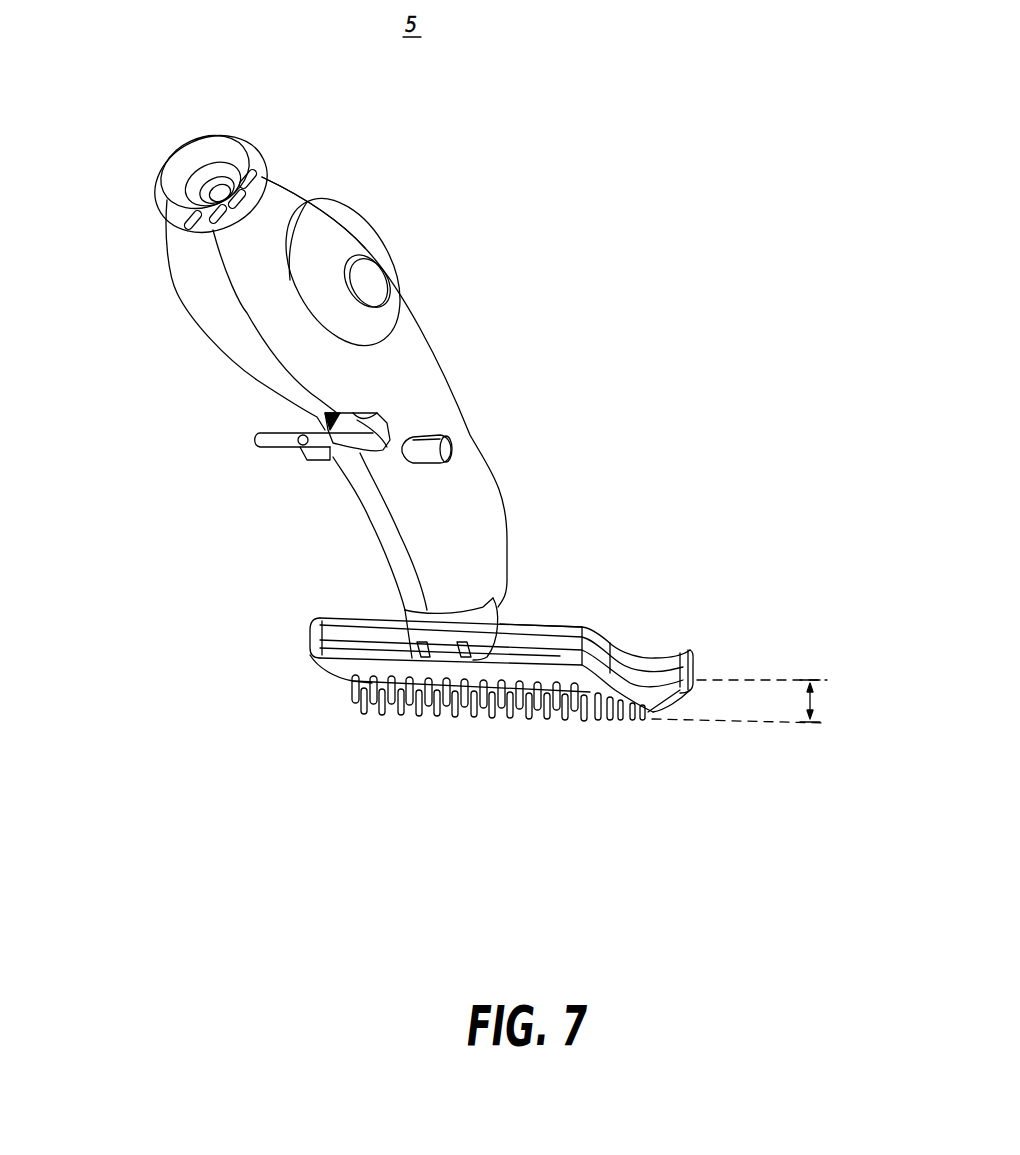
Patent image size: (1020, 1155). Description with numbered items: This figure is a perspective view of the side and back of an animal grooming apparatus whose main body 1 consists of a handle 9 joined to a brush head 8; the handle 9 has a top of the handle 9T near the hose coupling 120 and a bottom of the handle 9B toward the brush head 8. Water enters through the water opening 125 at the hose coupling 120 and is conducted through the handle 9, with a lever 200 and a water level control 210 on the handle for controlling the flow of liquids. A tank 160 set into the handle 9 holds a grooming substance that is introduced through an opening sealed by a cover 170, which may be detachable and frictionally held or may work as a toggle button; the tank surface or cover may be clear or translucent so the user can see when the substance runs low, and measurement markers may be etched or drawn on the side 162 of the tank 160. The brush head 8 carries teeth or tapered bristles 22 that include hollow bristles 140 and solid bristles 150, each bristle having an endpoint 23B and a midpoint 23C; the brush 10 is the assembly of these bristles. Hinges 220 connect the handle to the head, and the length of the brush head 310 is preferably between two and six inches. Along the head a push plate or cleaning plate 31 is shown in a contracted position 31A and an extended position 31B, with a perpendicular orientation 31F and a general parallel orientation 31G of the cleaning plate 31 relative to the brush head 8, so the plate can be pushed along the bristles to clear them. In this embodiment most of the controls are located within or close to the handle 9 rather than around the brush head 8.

The main body 1 is at (483, 190).
The brush head 8 is at (656, 606).
The handle 9 is at (153, 278).
The bottom of the handle 9B is at (203, 313).
The top of the handle 9T is at (297, 187).
The brush 10 is at (472, 723).
The tapered bristles 22 is at (347, 688).
The endpoint 23B is at (387, 712).
The midpoint 23C is at (353, 683).
The hose coupling 120 is at (247, 143).
The water opening 125 is at (213, 197).
The hollow bristles 140 is at (447, 717).
The solid bristles 150 is at (600, 718).
The tank 160 is at (360, 223).
The side of the tank 162 is at (310, 252).
The tank cover 170 is at (367, 282).
The lever 200 is at (257, 437).
The water level control 210 is at (453, 448).
The hinges 220 is at (508, 627).
The length of the brush head 310 is at (547, 673).
The push plate or cleaning plate 31 is at (690, 660).
The contracted position 31A is at (787, 680).
The extended position 31B is at (777, 727).
The perpendicular orientation 31F is at (667, 697).
The general parallel orientation 31G is at (808, 703).